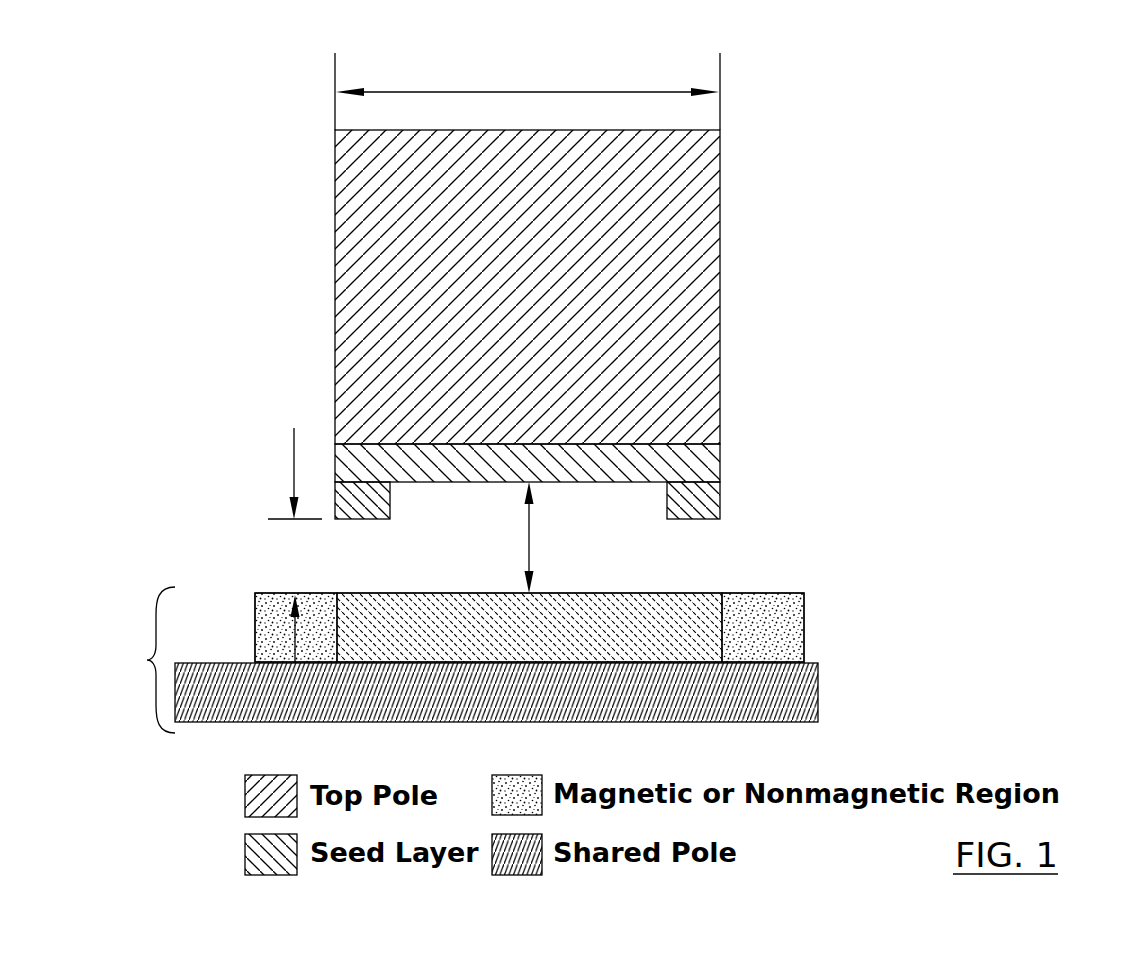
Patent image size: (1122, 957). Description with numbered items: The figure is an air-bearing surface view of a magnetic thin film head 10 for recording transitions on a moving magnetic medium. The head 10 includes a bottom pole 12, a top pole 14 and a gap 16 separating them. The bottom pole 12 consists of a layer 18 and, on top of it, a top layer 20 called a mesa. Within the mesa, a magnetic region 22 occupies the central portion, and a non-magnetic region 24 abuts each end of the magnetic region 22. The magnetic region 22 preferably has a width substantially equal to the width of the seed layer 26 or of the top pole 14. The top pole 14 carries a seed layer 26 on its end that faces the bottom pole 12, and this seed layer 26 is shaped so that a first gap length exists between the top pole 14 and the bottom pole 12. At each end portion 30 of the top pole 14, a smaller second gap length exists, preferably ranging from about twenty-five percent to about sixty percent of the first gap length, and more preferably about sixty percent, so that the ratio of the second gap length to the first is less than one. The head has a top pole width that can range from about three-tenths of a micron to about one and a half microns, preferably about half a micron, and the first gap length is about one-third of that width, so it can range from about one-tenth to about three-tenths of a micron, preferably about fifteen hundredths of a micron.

The magnetic thin film head 10 is at (984, 108).
The bottom pole 12 is at (139, 660).
The top pole 14 is at (352, 260).
The gap 16 is at (487, 563).
The layer 18 is at (812, 695).
The top layer (mesa) 20 is at (797, 638).
The magnetic region 22 is at (612, 597).
The non-magnetic regions 24 is at (322, 597).
The seed layer 26 is at (712, 455).
The end portion 30 is at (385, 507).